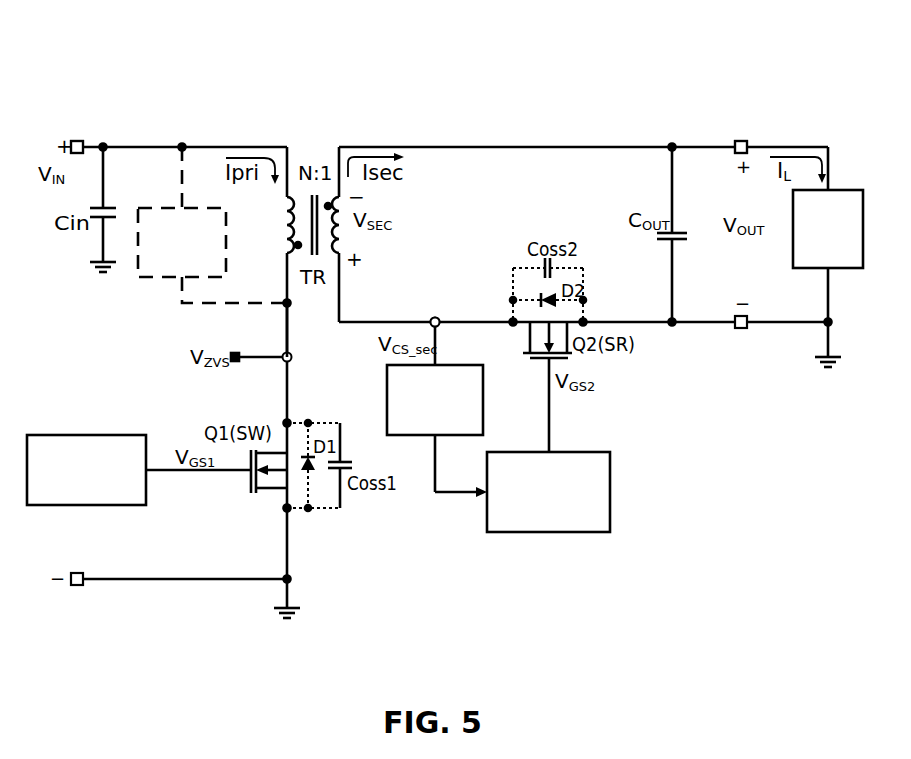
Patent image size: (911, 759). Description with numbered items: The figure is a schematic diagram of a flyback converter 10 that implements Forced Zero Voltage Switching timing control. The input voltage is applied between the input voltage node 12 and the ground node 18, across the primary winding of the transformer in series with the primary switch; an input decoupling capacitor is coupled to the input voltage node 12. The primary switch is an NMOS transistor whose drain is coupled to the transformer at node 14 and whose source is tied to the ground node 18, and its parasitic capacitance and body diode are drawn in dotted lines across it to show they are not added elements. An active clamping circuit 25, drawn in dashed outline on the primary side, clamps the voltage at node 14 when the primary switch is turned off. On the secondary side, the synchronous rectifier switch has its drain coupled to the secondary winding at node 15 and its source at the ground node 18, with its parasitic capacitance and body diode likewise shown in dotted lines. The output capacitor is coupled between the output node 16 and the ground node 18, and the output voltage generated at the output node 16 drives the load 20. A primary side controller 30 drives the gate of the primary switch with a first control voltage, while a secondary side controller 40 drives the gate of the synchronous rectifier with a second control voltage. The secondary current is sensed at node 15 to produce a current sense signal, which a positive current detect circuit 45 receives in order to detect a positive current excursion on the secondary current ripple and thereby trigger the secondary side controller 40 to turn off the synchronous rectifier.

The flyback converter 10 is at (822, 67).
The input voltage node 12 is at (140, 147).
The drain terminal node of the primary switch 14 is at (290, 335).
The drain terminal node of the synchronous rectifier 15 is at (392, 320).
The output node 16 is at (713, 147).
The ground node 18 is at (297, 608).
The load 20 is at (858, 190).
The active clamping circuit 25 is at (162, 278).
The primary side controller 30 is at (112, 435).
The secondary side controller 40 is at (612, 476).
The positive current detect circuit 45 is at (460, 365).